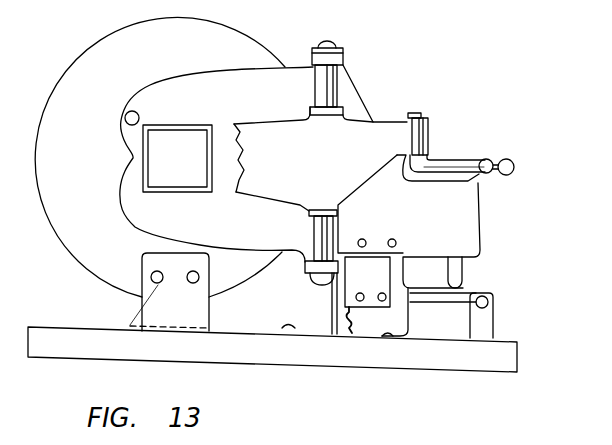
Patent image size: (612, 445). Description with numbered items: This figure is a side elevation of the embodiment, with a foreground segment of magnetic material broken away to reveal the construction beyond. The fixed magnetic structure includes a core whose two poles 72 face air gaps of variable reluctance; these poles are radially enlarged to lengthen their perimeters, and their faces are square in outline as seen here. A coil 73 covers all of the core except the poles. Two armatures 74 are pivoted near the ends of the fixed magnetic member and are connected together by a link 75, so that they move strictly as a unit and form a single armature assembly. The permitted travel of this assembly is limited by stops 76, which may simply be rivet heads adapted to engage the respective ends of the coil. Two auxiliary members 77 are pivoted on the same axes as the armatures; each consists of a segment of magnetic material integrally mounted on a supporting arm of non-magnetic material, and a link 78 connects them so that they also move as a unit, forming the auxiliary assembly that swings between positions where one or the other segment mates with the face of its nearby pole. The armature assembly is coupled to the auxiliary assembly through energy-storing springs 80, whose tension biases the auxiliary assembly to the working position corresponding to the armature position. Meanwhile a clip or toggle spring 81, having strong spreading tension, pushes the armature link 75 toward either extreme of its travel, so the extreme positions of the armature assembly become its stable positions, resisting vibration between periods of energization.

The poles of the core 72 is at (189, 171).
The coil 73 is at (82, 171).
The armatures 74 is at (241, 230).
The link 75 is at (467, 270).
The stops 76 is at (125, 114).
The auxiliary members 77 is at (324, 172).
The link 78 is at (463, 160).
The springs 80 is at (514, 167).
The clip or toggle spring 81 is at (438, 282).